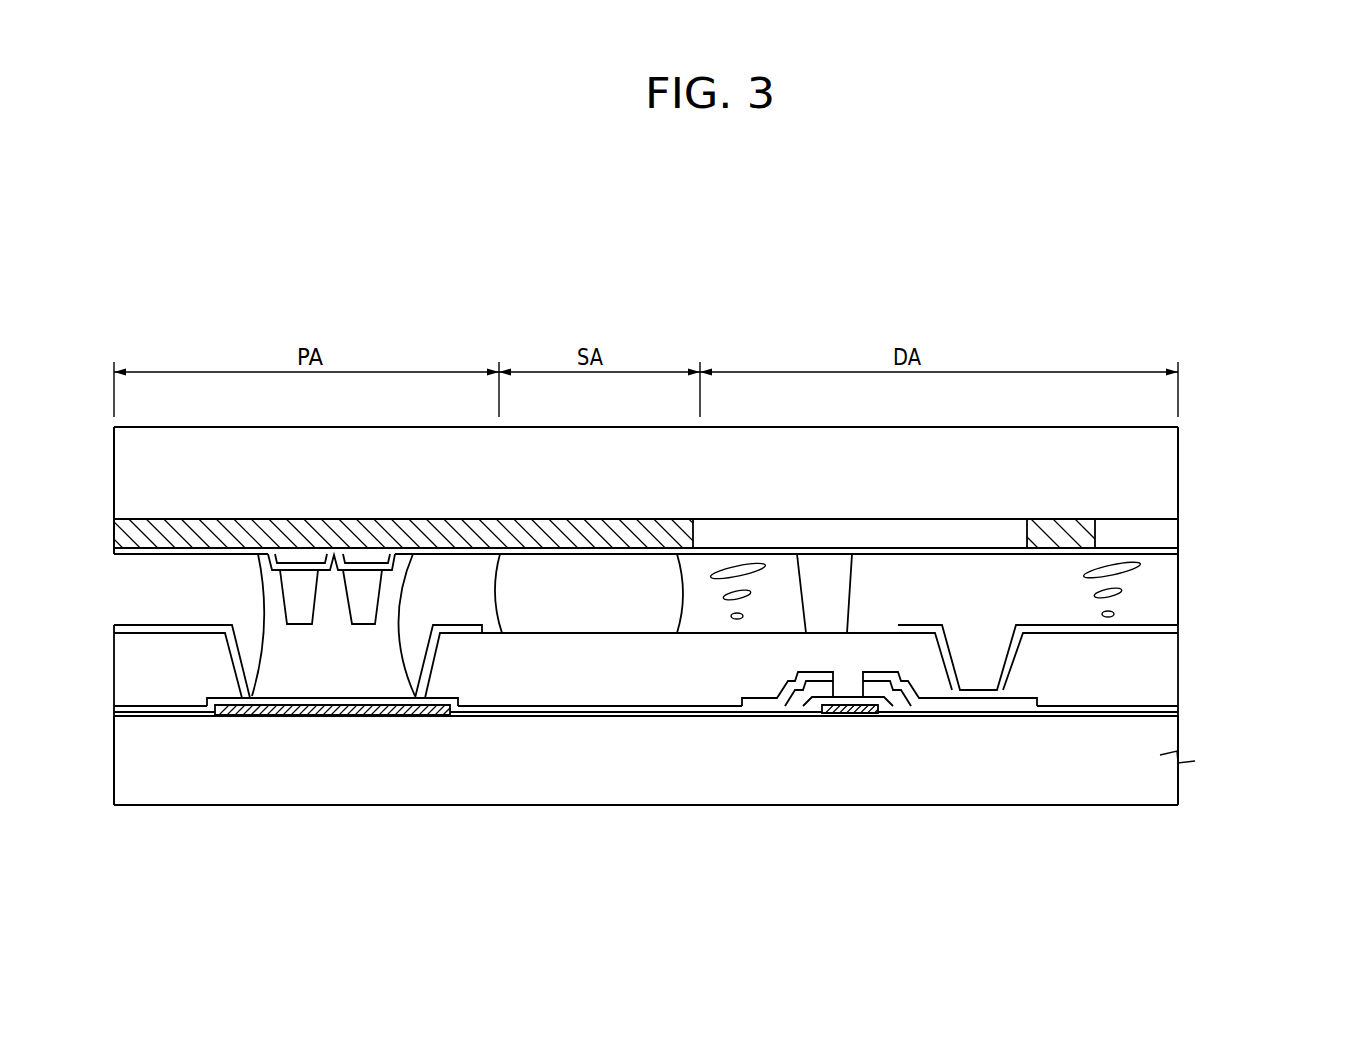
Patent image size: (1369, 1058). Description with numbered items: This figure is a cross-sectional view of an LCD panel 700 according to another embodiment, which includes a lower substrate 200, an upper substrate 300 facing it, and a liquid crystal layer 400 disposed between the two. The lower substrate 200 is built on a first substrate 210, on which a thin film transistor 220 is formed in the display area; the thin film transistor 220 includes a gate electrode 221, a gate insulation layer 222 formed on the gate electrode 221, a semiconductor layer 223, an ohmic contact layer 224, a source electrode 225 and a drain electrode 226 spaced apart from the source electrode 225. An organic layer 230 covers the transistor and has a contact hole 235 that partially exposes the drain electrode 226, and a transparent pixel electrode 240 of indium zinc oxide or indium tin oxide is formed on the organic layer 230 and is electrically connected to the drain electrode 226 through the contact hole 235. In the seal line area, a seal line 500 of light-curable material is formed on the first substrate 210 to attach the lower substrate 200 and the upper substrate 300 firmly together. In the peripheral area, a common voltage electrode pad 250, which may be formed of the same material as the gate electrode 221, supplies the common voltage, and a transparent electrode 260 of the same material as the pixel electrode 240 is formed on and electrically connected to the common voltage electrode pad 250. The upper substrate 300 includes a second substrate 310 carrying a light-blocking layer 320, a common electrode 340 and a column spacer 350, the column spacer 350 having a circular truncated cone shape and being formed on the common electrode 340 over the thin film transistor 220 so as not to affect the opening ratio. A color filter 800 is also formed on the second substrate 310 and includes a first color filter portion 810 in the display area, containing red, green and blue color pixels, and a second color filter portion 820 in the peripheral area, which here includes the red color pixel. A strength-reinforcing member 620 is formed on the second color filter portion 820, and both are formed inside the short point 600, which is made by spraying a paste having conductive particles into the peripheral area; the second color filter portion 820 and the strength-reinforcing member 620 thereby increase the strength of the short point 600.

The lower substrate 200 is at (1249, 616).
The first substrate 210 is at (1167, 733).
The thin film transistor 220 is at (1000, 866).
The gate electrode 221 is at (845, 706).
The gate insulation layer 222 is at (890, 708).
The semiconductor layer 223 is at (798, 706).
The ohmic contact layer 224 is at (902, 697).
The source electrode 225 is at (757, 704).
The drain electrode 226 is at (940, 703).
The organic layer 230 is at (1167, 670).
The contact hole 235 is at (975, 655).
The pixel electrode 240 is at (1167, 626).
The common voltage electrode pad 250 is at (330, 716).
The transparent electrode 260 is at (117, 629).
The upper substrate 300 is at (1247, 462).
The second substrate 310 is at (1168, 471).
The light-blocking layer 320 is at (1087, 517).
The common electrode 340 is at (1168, 548).
The column spacer 350 is at (843, 587).
The liquid crystal layer 400 is at (1168, 588).
The seal line 500 is at (595, 615).
The short point 600 is at (282, 668).
The strength-reinforcing member 620 is at (293, 602).
The LCD panel 700 is at (1309, 497).
The color filter 800 is at (1190, 522).
The first color filter portion 810 is at (1012, 527).
The second color filter portion 820 is at (278, 549).